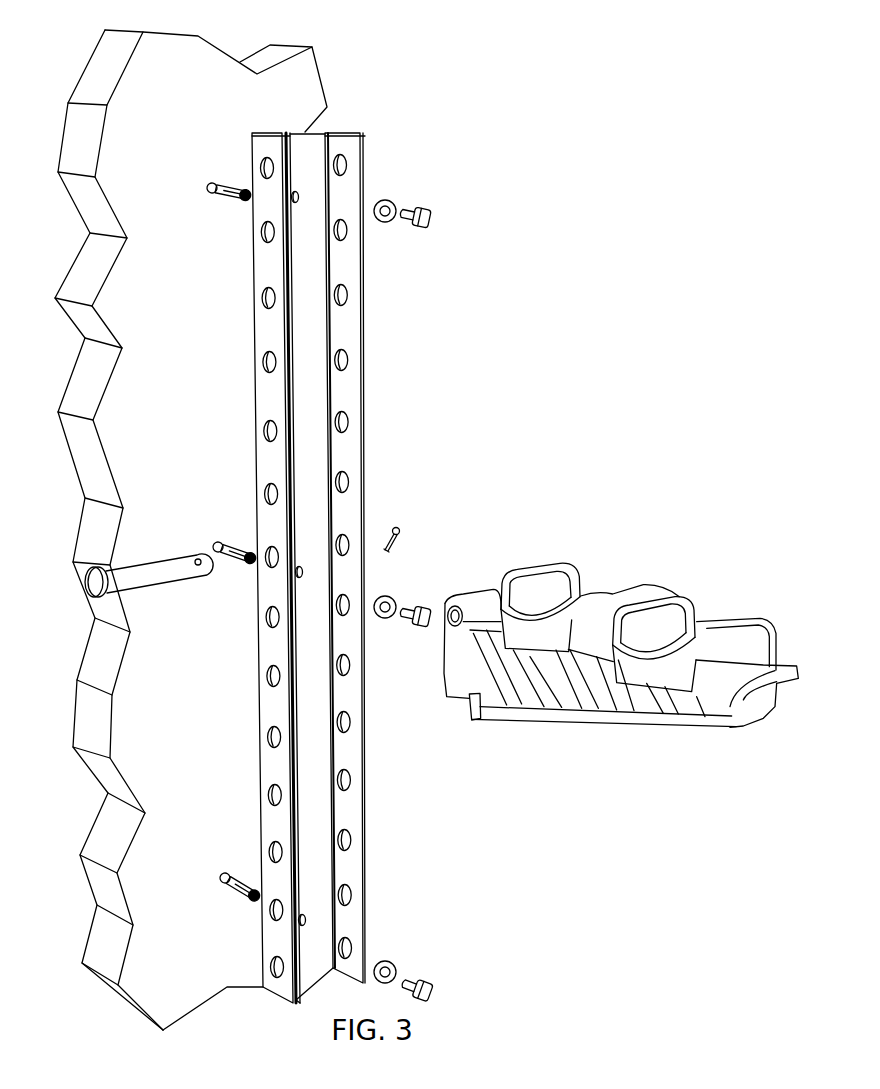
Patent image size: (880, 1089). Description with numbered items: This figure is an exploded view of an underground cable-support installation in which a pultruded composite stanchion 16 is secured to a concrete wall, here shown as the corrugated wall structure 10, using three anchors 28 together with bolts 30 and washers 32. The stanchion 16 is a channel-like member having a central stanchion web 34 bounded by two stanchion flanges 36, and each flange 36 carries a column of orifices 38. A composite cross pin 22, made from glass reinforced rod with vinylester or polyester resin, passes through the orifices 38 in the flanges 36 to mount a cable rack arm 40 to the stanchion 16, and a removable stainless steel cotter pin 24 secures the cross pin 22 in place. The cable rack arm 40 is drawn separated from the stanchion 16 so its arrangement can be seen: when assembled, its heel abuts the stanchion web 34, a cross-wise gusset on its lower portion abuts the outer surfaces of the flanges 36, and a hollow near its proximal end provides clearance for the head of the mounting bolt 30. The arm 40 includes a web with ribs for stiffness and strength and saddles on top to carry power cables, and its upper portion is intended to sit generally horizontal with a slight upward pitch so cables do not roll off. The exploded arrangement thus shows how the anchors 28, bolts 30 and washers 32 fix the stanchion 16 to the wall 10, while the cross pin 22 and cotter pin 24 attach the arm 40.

The corrugated wall panel 10 is at (183, 814).
The pultruded composite stanchion 16 is at (310, 568).
The composite cross pin 22 is at (150, 590).
The removable cotter pin 24 is at (402, 535).
The anchor 28 is at (233, 200).
The bolt 30 is at (430, 230).
The washer 32 is at (397, 200).
The stanchion web 34 is at (299, 346).
The stanchion flange 36 is at (367, 337).
The orifice 38 is at (350, 483).
The cable rack arm 40 is at (602, 717).